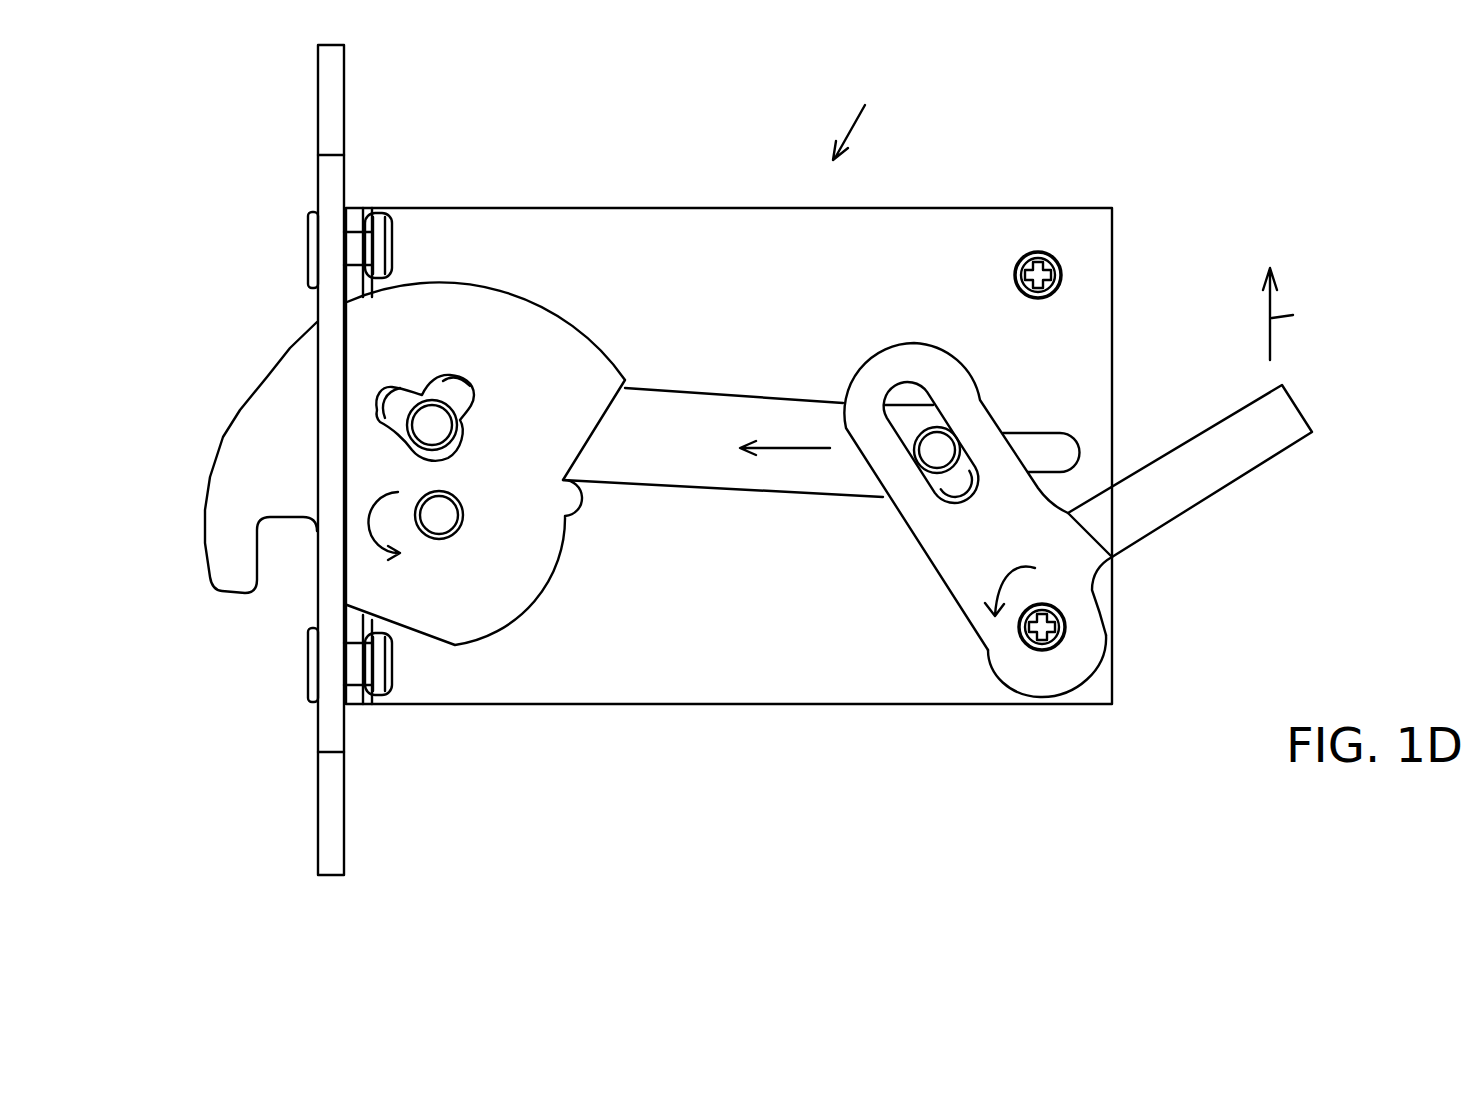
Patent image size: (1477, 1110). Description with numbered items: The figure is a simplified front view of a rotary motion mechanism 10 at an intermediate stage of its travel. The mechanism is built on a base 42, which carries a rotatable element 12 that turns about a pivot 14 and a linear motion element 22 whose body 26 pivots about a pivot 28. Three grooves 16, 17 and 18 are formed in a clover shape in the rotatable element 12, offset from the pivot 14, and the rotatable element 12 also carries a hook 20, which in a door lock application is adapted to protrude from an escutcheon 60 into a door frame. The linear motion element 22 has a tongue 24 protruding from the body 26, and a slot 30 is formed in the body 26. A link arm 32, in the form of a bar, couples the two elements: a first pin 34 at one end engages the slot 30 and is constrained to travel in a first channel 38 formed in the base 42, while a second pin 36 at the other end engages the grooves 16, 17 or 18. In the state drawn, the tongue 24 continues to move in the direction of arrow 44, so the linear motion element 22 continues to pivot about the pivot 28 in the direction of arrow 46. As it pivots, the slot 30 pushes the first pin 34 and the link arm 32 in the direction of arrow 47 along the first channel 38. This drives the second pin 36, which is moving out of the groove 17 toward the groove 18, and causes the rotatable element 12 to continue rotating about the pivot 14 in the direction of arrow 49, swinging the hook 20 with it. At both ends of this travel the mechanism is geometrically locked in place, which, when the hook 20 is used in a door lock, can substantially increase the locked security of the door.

The rotary motion mechanism 10 is at (875, 112).
The rotatable element 12 is at (516, 307).
The pivot 14 is at (445, 518).
The groove 16 is at (470, 395).
The groove 17 is at (445, 455).
The groove 18 is at (406, 396).
The hook 20 is at (215, 547).
The linear motion element 22 is at (927, 593).
The tongue 24 is at (1207, 478).
The body 26 is at (985, 648).
The pivot 28 is at (1065, 630).
The slot 30 is at (903, 393).
The link arm 32 is at (742, 418).
The first pin 34 is at (937, 450).
The second pin 36 is at (432, 430).
The first channel 38 is at (1046, 445).
The base 42 is at (705, 693).
The arrow 44 is at (1312, 314).
The arrow 46 is at (1005, 567).
The arrow 47 is at (793, 452).
The arrow 49 is at (398, 553).
The escutcheon 60 is at (318, 92).